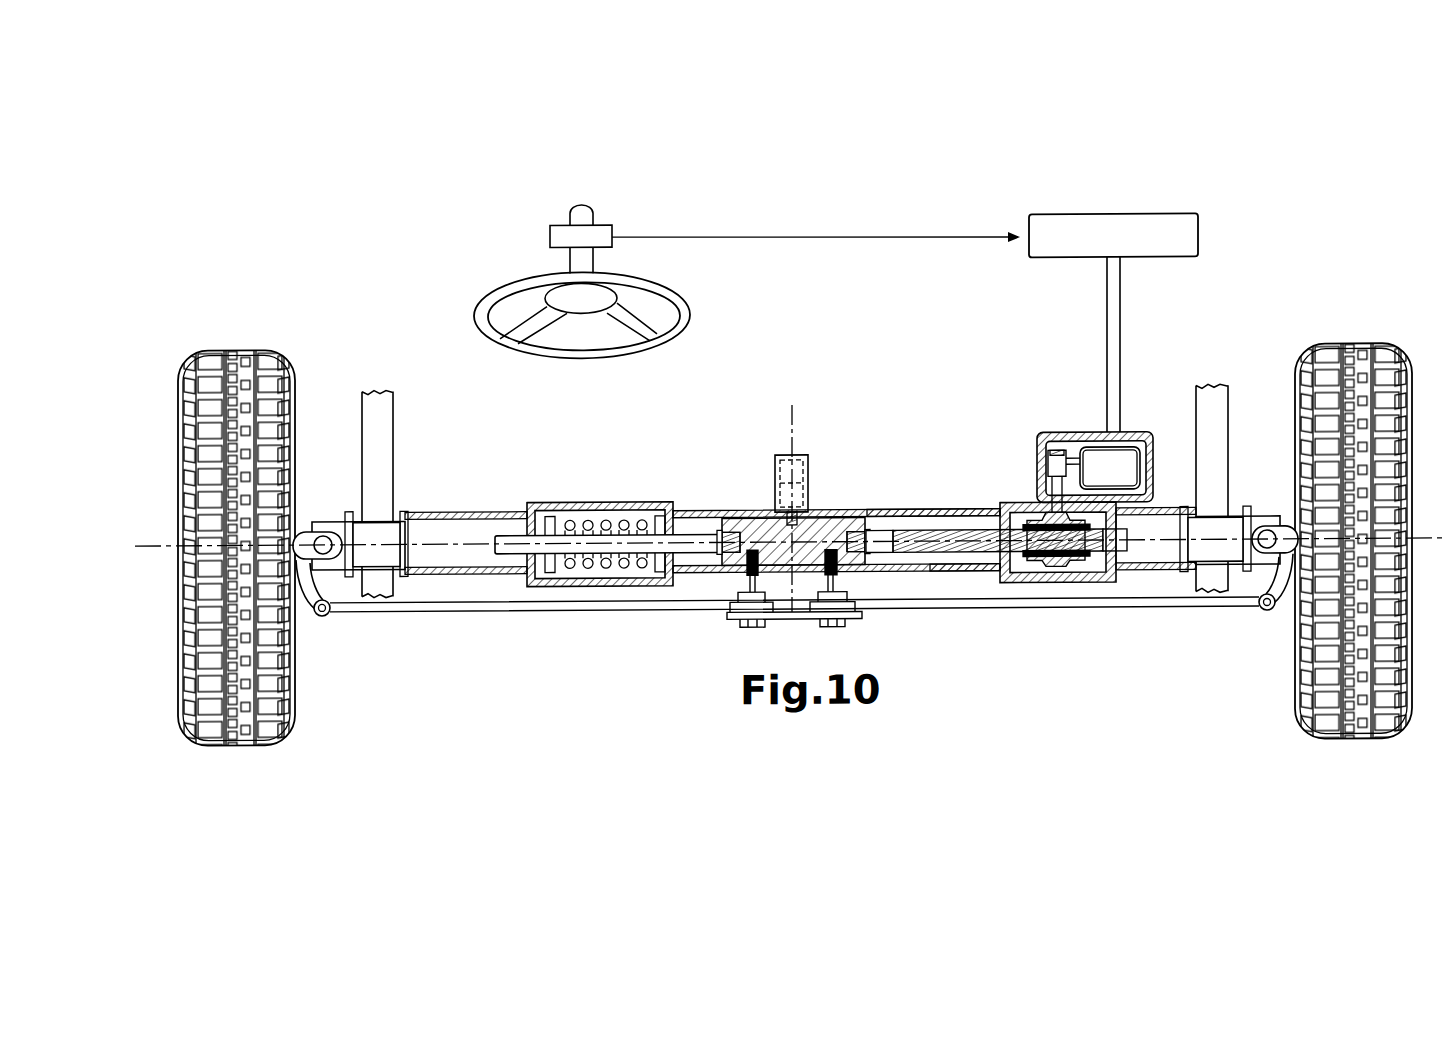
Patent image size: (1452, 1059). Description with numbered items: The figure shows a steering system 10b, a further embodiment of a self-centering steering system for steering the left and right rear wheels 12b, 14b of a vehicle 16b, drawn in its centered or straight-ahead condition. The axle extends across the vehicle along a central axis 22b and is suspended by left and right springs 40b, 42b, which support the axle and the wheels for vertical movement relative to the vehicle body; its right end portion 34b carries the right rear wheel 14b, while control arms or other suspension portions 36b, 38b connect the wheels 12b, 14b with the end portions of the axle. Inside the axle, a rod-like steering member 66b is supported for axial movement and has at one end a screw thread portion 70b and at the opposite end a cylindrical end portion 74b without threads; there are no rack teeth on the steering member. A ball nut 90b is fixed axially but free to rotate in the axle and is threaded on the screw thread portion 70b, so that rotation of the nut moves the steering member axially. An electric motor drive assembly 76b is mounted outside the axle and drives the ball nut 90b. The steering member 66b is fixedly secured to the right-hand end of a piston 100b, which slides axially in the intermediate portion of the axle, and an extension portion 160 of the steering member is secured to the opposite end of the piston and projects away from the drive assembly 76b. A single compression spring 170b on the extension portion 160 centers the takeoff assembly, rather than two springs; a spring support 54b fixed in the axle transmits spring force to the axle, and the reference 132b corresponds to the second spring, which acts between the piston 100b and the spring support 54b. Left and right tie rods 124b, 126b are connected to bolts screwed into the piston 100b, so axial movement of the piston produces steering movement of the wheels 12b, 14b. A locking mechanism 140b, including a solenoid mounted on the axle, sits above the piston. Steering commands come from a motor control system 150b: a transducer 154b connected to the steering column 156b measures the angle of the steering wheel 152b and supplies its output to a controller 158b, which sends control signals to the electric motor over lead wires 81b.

The steering system 10b is at (398, 240).
The left rear wheel 12b is at (258, 704).
The right rear wheel 14b is at (1342, 699).
The vehicle 16b is at (356, 272).
The axle axis 22b is at (152, 548).
The second end portion of axle 34b is at (1157, 584).
The suspension portions 36b is at (300, 530).
The suspension portions 38b is at (1285, 530).
The left spring 40b is at (377, 416).
The right spring 42b is at (1218, 410).
The first internal spring support 54b is at (998, 576).
The steering member 66b is at (895, 514).
The screw thread portion 70b is at (1123, 560).
The opposite end portion 74b is at (884, 566).
The electric motor drive assembly 76b is at (1027, 470).
The lead wires 81b is at (1107, 358).
The ball nut 90b is at (1048, 588).
The piston 100b is at (745, 518).
The left tie rod 124b is at (378, 612).
The right tie rod 126b is at (1213, 610).
The second spring 132b is at (958, 520).
The locking mechanism 140b is at (808, 466).
The motor control system 150b is at (1205, 142).
The steering wheel 152b is at (505, 352).
The transducer 154b is at (562, 238).
The steering column 156b is at (590, 206).
The controller 158b is at (1144, 216).
The extension portion 160 is at (512, 553).
The spring 170b is at (602, 579).